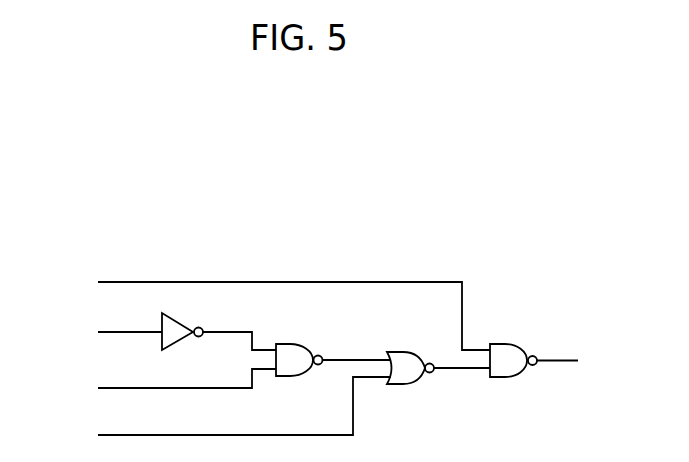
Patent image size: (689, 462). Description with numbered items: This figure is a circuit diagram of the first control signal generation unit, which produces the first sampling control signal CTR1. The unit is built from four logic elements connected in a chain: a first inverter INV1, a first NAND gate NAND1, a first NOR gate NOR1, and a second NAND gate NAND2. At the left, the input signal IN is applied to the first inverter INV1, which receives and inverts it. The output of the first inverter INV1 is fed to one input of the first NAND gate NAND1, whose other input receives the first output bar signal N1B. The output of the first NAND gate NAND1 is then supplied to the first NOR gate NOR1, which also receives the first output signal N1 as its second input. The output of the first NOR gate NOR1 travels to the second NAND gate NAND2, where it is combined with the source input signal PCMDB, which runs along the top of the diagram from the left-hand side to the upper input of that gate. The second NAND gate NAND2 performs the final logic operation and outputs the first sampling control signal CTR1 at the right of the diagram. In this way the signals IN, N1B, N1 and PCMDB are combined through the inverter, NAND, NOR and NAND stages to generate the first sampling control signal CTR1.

The source input signal PCMDB is at (263, 309).
The input signal IN is at (118, 331).
The first inverter INV1 is at (178, 317).
The first output bar signal N1B is at (169, 384).
The first NAND gate NAND1 is at (288, 343).
The first output signal N1 is at (231, 411).
The first NOR gate NOR1 is at (397, 386).
The second NAND gate NAND2 is at (503, 343).
The first sampling control signal CTR1 is at (583, 360).